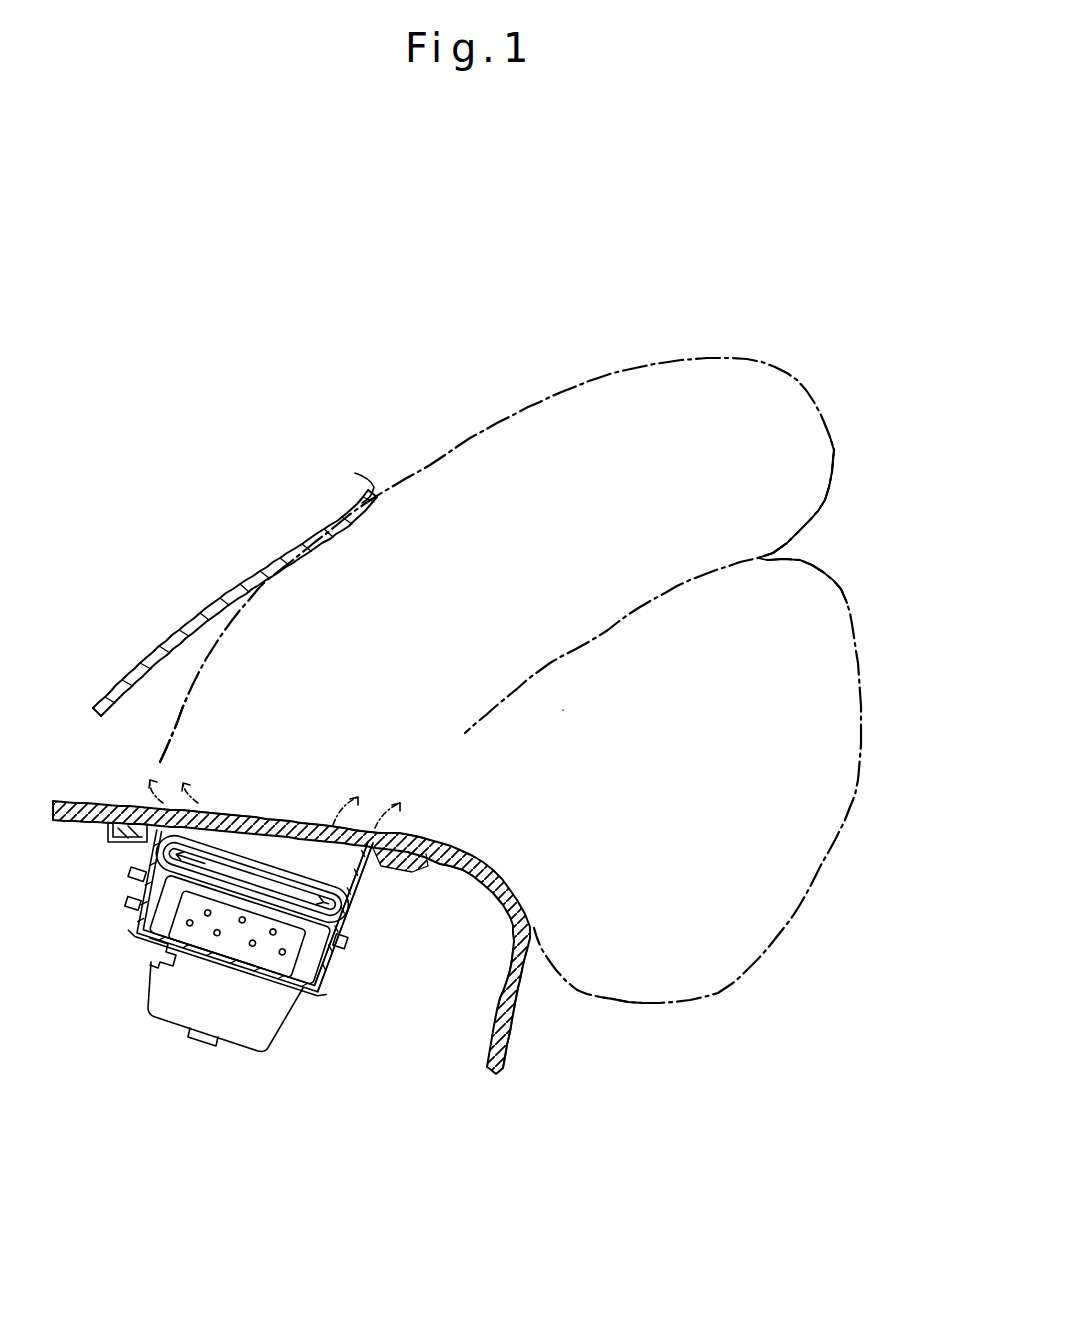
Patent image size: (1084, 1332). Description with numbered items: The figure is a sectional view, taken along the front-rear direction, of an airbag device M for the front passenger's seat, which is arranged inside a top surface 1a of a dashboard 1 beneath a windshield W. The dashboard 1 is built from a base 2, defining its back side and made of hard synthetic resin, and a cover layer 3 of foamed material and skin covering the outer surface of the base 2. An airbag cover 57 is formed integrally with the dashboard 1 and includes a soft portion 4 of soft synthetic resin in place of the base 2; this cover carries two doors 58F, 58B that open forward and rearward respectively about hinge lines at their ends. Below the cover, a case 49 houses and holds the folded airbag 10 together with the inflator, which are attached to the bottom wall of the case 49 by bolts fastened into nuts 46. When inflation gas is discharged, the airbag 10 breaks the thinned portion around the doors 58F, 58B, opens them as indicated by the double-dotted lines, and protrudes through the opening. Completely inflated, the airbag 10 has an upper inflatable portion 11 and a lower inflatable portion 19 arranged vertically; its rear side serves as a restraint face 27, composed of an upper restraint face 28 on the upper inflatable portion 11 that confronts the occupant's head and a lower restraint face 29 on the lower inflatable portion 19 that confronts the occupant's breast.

The dashboard 1 is at (523, 1027).
The top surface 1a is at (413, 833).
The base 2 is at (467, 872).
The cover layer 3 is at (507, 1007).
The soft portion 4 is at (367, 887).
The airbag 10 is at (270, 870).
The upper inflatable portion 11 is at (731, 372).
The lower inflatable portion 19 is at (820, 863).
The restraint face 27 is at (899, 462).
The upper restraint face 28 is at (833, 438).
The lower restraint face 29 is at (847, 603).
The nuts 46 is at (243, 1053).
The case 49 is at (327, 997).
The airbag cover 57 is at (140, 850).
The front door 58F is at (230, 805).
The rear door 58B is at (328, 812).
The airbag device M is at (247, 970).
The windshield W is at (193, 620).